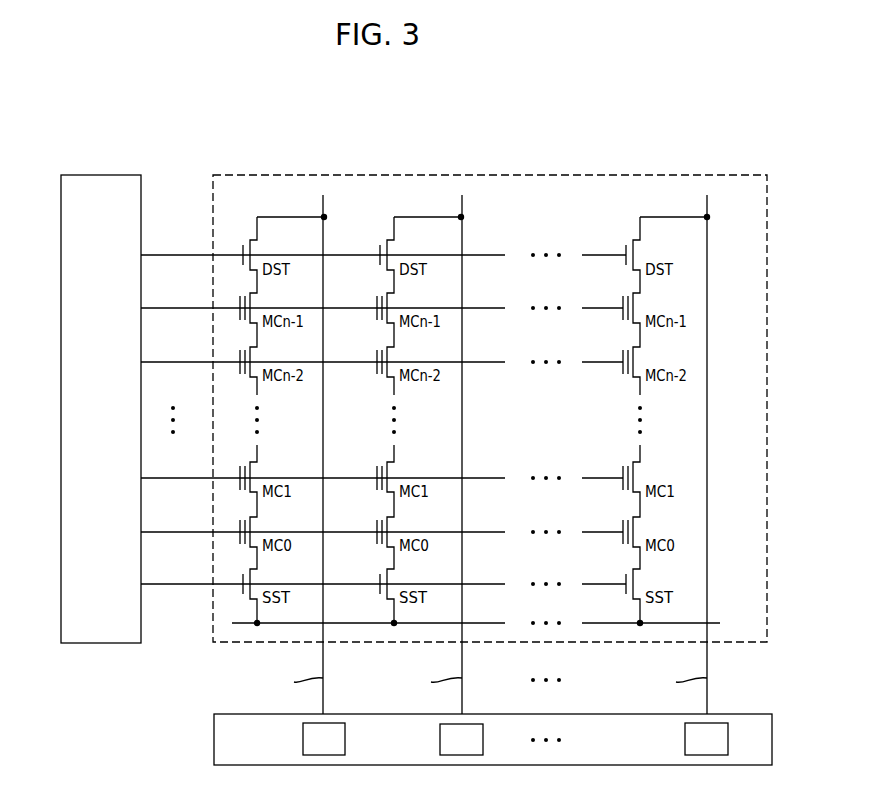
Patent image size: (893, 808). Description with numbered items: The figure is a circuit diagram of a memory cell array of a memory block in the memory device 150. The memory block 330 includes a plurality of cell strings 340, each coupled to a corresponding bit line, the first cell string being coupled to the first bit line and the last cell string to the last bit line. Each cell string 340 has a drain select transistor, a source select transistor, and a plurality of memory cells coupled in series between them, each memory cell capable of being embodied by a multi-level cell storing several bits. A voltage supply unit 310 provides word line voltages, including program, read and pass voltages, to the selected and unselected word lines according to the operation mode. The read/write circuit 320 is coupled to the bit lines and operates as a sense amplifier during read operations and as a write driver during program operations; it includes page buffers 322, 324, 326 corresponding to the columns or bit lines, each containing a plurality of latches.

The memory device 150 is at (745, 95).
The voltage supply unit 310 is at (101, 175).
The read/write circuit 320 is at (463, 739).
The page buffer 322 is at (303, 740).
The page buffer 324 is at (440, 740).
The page buffer 326 is at (685, 740).
The memory block 330 is at (454, 433).
The cell string 340 is at (247, 218).